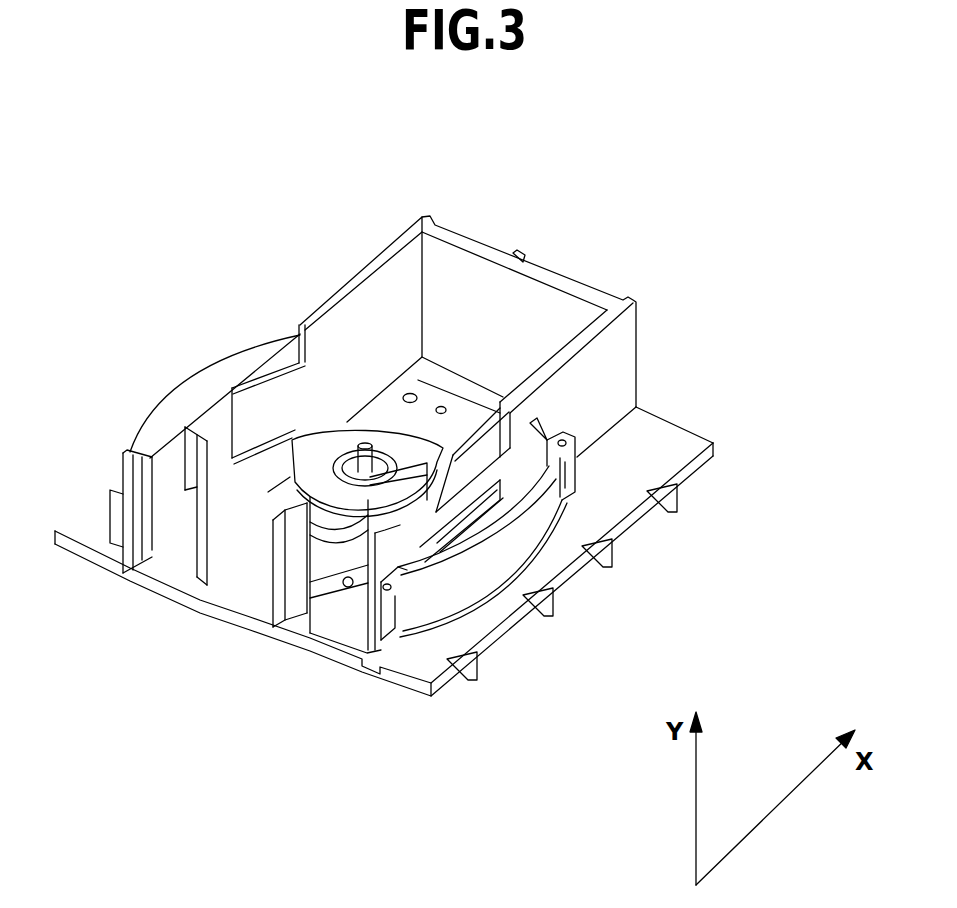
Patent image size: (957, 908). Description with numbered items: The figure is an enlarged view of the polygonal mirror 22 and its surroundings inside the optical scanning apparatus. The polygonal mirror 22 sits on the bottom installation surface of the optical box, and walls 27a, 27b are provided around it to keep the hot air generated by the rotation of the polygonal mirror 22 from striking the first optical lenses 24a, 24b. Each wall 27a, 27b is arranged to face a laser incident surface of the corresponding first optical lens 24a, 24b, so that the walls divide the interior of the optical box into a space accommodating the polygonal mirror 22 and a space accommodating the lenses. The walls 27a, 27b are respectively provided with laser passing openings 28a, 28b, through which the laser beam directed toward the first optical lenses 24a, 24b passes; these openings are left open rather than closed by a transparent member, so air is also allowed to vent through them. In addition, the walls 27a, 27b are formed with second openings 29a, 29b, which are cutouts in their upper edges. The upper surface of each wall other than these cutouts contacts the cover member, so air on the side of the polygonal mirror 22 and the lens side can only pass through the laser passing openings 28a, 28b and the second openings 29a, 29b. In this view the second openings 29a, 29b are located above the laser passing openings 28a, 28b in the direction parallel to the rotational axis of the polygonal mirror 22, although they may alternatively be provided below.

The polygonal mirror 22 is at (350, 495).
The first optical lens 24a is at (180, 397).
The first optical lens 24b is at (500, 537).
The wall 27a is at (373, 310).
The wall 27b is at (600, 400).
The laser passing opening 28a is at (235, 420).
The laser passing opening 28b is at (397, 528).
The second opening 29a is at (253, 397).
The second opening 29b is at (478, 457).